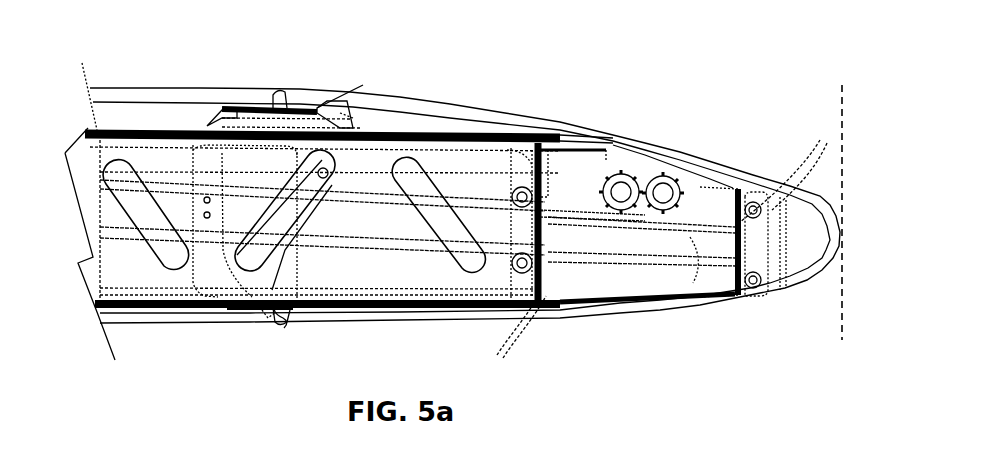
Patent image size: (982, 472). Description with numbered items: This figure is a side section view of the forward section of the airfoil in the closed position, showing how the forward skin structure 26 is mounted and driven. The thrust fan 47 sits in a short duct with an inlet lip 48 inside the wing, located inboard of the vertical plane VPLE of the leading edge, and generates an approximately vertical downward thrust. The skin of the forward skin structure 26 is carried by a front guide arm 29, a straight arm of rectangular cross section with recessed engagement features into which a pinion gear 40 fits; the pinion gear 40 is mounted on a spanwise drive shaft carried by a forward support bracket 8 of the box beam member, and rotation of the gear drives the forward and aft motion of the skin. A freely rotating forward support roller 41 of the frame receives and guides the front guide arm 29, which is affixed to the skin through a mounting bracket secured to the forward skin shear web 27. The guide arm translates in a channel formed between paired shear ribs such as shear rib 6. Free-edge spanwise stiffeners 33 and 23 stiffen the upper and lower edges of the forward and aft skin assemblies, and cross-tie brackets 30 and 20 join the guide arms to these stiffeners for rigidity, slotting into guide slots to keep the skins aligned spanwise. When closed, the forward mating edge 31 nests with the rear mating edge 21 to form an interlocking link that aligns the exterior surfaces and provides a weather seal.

The outboard shear rib 6 is at (420, 267).
The forward support bracket 8 is at (655, 180).
The cross-tie bracket 20 is at (347, 120).
The rear mating edge 21 is at (268, 313).
The free-edge spanwise stiffener 23 is at (248, 96).
The inboard forward skin structure 26 is at (603, 128).
The forward skin shear web 27 is at (780, 260).
The front guide arm 29 is at (700, 240).
The cross-tie bracket 30 is at (197, 150).
The forward mating edge 31 is at (280, 310).
The free-edge spanwise stiffener 33 is at (295, 103).
The pinion gear 40 is at (627, 178).
The forward support roller 41 is at (795, 167).
The thrust fan 47 is at (170, 127).
The inlet lip 48 is at (510, 140).
The vertical plane of the leading edge VPLE is at (843, 178).